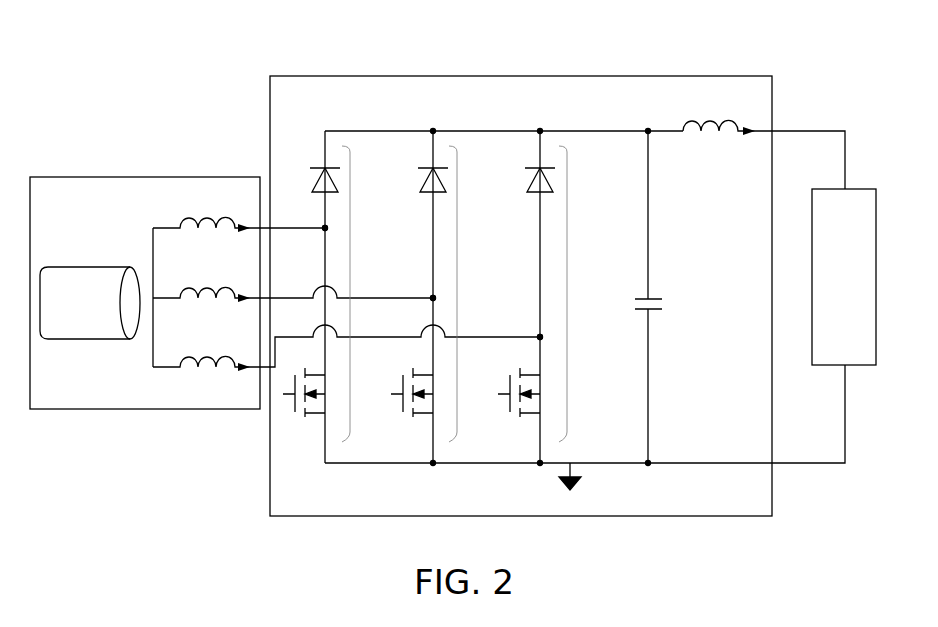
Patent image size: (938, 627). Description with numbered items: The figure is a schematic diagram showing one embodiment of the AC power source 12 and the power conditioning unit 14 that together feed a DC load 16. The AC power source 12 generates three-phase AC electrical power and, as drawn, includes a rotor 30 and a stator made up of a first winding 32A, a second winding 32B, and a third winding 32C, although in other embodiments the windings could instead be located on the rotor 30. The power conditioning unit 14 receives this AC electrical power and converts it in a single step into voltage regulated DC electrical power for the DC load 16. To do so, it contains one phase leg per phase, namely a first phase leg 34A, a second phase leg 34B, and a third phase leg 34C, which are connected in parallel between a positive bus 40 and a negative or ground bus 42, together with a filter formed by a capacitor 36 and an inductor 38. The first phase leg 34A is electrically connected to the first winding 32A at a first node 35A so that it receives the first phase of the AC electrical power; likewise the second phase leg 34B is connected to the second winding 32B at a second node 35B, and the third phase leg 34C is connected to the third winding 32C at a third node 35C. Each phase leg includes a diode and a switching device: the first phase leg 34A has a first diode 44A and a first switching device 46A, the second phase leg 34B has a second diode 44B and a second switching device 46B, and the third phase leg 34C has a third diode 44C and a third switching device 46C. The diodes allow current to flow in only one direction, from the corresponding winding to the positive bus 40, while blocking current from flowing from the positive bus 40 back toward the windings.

The AC power source 12 is at (135, 177).
The power conditioning unit 14 is at (517, 76).
The DC load 16 is at (866, 188).
The rotor 30 is at (88, 342).
The first winding 32A is at (205, 233).
The second winding 32B is at (205, 303).
The third winding 32C is at (208, 375).
The first phase leg 34A is at (352, 244).
The second phase leg 34B is at (459, 244).
The third phase leg 34C is at (569, 244).
The first node 35A is at (322, 232).
The second node 35B is at (437, 299).
The third node 35C is at (545, 338).
The capacitor 36 is at (658, 312).
The inductor 38 is at (712, 142).
The positive bus 40 is at (368, 131).
The negative bus 42 is at (732, 462).
The first diode 44A is at (318, 178).
The second diode 44B is at (425, 178).
The third diode 44C is at (533, 178).
The first switching device 46A is at (307, 420).
The second switching device 46B is at (415, 420).
The third switching device 46C is at (522, 420).